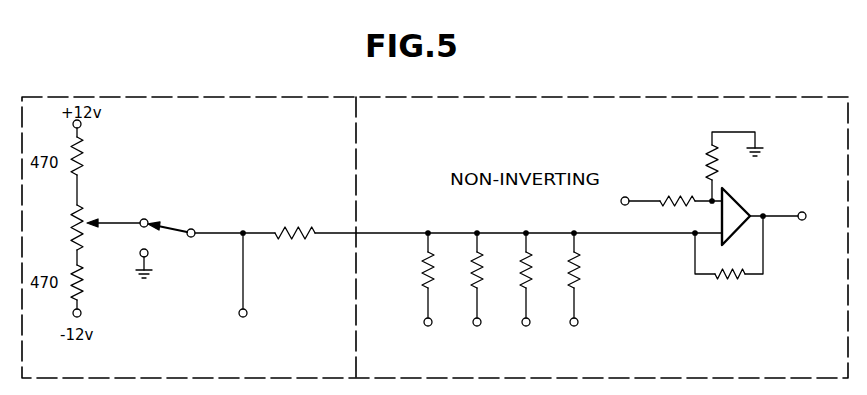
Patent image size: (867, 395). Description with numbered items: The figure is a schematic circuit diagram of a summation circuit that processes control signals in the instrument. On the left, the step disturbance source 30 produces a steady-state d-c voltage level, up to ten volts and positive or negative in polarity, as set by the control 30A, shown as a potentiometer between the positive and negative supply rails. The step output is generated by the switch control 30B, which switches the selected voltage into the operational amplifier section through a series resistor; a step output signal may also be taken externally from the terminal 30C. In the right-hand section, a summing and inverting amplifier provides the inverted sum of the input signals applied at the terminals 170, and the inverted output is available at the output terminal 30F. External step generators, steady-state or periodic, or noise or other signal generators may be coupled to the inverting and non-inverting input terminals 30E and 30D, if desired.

The step disturbance source 30 is at (353, 96).
The control 30A is at (108, 222).
The switch control 30B is at (184, 226).
The terminal 30C is at (248, 311).
The non-inverting input terminal 30D is at (653, 182).
The inverting input terminal 30E is at (424, 323).
The output terminal 30F is at (796, 210).
The input terminals 170 is at (481, 323).